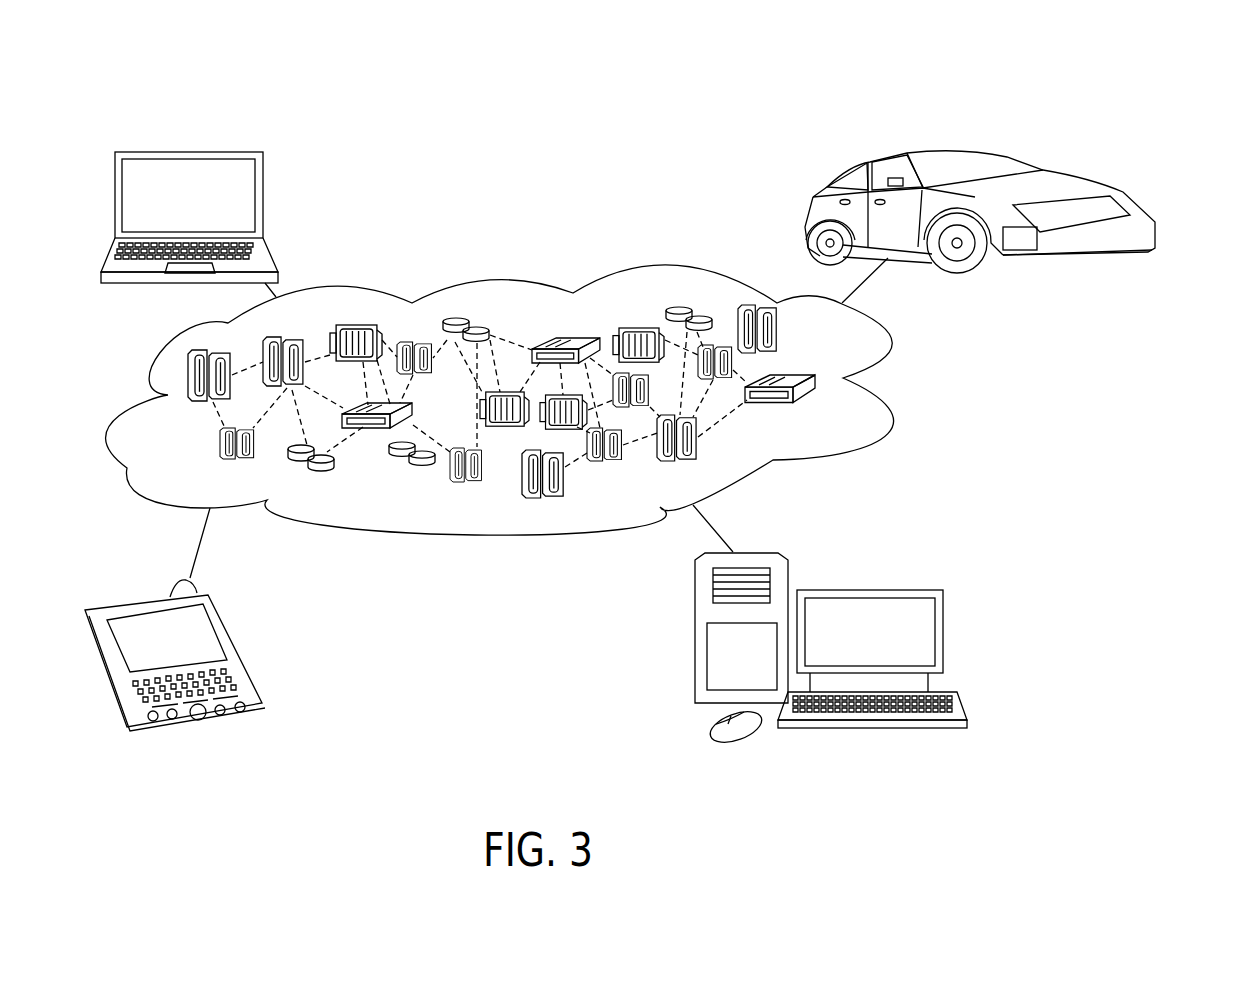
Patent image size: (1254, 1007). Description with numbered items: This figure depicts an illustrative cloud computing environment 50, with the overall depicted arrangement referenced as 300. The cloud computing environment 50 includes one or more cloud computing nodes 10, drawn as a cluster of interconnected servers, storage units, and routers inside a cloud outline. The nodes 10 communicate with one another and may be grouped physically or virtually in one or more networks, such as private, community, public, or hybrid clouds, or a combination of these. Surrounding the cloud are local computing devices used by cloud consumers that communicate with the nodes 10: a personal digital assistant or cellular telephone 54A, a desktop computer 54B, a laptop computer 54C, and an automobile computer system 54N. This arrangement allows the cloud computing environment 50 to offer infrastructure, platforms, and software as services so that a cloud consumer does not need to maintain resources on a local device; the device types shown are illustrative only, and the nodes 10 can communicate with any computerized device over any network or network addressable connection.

The cloud computing environment 300 is at (1180, 117).
The cloud computing environment 50 is at (532, 400).
The cloud computing node 10 is at (833, 423).
The personal digital assistant (PDA) or cellular telephone 54A is at (227, 631).
The desktop computer 54B is at (943, 630).
The laptop computer 54C is at (263, 198).
The automobile computer system 54N is at (1043, 170).